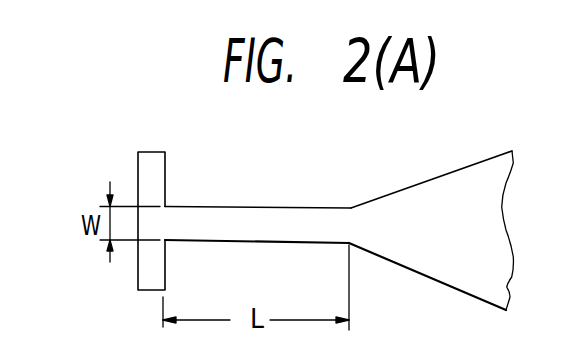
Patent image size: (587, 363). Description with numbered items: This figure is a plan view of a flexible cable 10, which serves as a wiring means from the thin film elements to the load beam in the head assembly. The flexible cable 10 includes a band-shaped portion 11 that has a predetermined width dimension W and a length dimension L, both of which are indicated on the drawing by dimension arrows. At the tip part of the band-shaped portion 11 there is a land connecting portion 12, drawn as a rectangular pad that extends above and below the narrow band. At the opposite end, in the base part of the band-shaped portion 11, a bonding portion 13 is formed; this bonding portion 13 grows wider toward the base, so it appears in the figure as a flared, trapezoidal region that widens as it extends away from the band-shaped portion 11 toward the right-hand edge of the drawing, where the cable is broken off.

The flexible cable 10 is at (358, 198).
The band-shaped portion 11 is at (253, 215).
The land connecting portion 12 is at (143, 170).
The bonding portion 13 is at (420, 260).